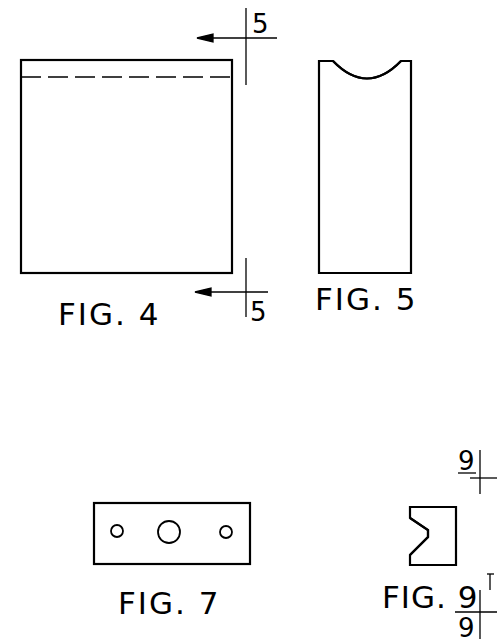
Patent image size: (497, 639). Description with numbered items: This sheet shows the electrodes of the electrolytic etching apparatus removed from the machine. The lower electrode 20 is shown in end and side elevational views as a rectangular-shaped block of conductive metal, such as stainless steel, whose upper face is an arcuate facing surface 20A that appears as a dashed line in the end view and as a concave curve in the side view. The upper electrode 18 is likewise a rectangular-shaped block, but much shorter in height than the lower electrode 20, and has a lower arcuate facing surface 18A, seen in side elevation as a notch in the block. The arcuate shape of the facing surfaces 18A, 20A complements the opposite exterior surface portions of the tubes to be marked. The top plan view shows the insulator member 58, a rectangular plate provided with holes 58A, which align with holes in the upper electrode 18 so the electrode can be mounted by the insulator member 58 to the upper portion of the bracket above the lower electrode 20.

In FIG. 4, the lower electrode 20 is at (232, 140).
In FIG. 5, the lower electrode 20 is at (411, 140).
In FIG. 4, the upper arcuate facing surface 20A is at (100, 77).
In FIG. 5, the upper arcuate facing surface 20A is at (368, 78).
In FIG. 7, the insulator member 58 is at (105, 503).
In FIG. 7, the holes 58A is at (117, 525).
In FIG. 9, the upper electrode 18 is at (428, 507).
In FIG. 9, the lower arcuate facing surface 18A is at (416, 545).